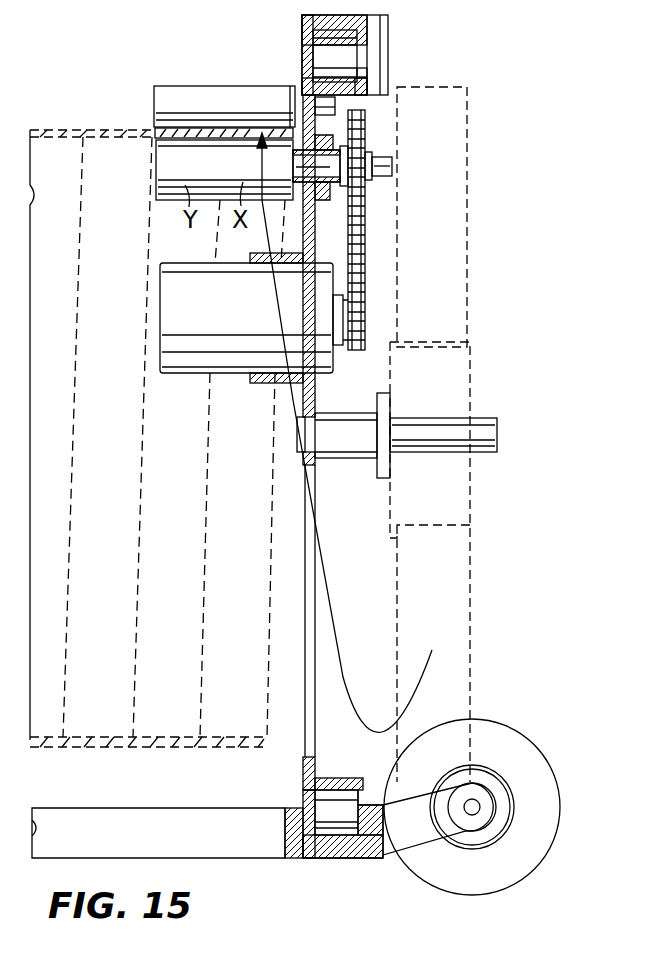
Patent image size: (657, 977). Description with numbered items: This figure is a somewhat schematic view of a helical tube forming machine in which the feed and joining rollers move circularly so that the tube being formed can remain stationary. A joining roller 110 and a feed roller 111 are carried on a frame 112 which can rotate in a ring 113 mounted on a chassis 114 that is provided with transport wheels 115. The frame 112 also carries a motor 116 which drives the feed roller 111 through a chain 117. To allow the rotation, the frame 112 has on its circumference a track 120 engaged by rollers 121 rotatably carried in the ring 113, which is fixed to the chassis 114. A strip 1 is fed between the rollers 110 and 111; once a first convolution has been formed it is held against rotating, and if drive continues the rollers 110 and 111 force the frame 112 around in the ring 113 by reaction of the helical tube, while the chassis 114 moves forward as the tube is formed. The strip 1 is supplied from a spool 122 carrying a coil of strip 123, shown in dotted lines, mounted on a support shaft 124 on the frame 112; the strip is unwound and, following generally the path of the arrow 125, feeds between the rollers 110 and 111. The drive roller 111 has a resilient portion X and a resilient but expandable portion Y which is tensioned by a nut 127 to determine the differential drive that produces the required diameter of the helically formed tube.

The strip 1 is at (103, 136).
The joining roller 110 is at (199, 94).
The feed roller 111 is at (215, 170).
The frame 112 is at (315, 223).
The ring 113 is at (301, 17).
The chassis 114 is at (265, 840).
The transport wheels 115 is at (487, 722).
The motor 116 is at (240, 312).
The chain 117 is at (355, 265).
The track 120 is at (368, 88).
The rollers 121 is at (325, 48).
The spool 122 is at (455, 378).
The coil of strip 123 is at (462, 182).
The support shaft 124 is at (487, 454).
The arrow 125 is at (343, 677).
The nut 127 is at (392, 155).